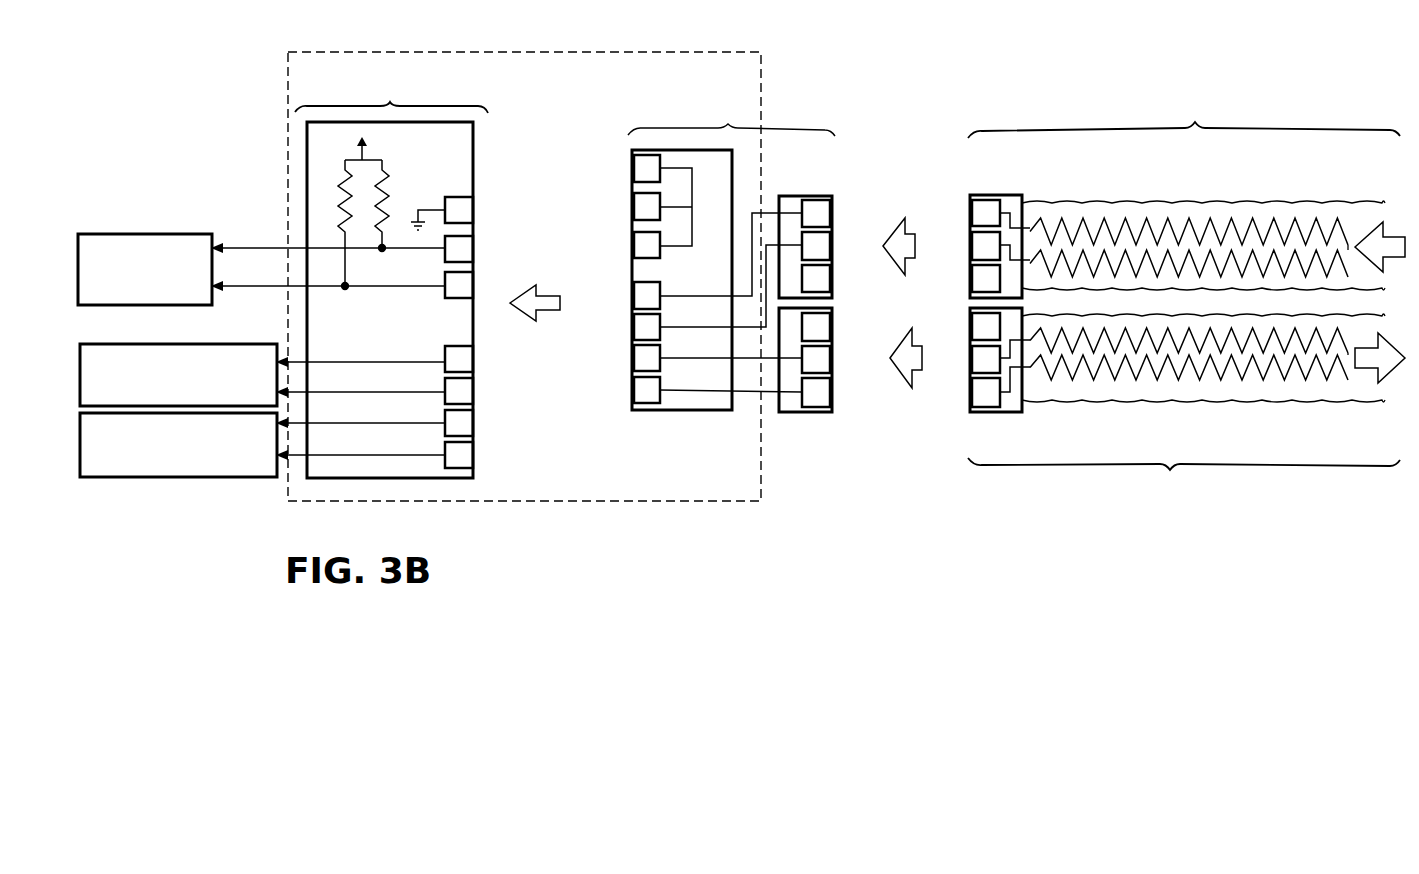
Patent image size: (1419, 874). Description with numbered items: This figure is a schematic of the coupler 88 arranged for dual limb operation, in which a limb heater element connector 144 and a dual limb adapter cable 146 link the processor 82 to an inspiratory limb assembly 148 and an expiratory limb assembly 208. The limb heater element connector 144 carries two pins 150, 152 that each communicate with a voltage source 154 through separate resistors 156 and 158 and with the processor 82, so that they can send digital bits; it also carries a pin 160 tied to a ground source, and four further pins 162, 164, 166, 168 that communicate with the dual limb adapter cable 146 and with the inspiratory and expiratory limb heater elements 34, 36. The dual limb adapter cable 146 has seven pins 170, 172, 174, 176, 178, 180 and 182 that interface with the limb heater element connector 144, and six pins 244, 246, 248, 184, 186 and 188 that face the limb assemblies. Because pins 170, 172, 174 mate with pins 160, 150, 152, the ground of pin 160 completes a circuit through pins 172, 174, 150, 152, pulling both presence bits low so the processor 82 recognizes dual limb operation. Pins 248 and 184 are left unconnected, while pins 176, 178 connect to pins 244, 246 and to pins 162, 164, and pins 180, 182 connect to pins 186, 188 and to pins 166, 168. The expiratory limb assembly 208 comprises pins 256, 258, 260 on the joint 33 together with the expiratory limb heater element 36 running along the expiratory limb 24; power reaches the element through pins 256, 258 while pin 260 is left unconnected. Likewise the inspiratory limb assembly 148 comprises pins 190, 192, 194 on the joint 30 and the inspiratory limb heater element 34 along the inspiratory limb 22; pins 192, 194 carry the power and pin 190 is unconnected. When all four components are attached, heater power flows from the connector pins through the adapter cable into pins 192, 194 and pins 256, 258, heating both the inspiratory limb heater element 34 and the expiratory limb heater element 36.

The coupler 88 is at (458, 50).
The limb heater element connector 144 is at (391, 278).
The dual limb adapter cable 146 is at (731, 255).
The voltage source 154 is at (366, 140).
The resistor 156 is at (412, 176).
The resistor 158 is at (342, 182).
The pin 160 is at (473, 208).
The pin 150 is at (473, 250).
The pin 152 is at (473, 286).
The pin 162 is at (473, 360).
The pin 164 is at (473, 392).
The pin 166 is at (473, 424).
The pin 168 is at (473, 456).
The processor 82 is at (136, 234).
The expiratory limb heater element 36 is at (142, 344).
The inspiratory limb heater element 34 is at (175, 476).
The pin 170 is at (634, 170).
The pin 172 is at (634, 208).
The pin 174 is at (634, 244).
The pin 176 is at (634, 292).
The pin 178 is at (634, 324).
The pin 180 is at (634, 356).
The pin 182 is at (634, 388).
The pin 244 is at (830, 207).
The pin 246 is at (830, 253).
The pin 248 is at (856, 281).
The pin 184 is at (870, 337).
The pin 186 is at (830, 360).
The pin 188 is at (832, 395).
The pin 256 is at (970, 208).
The pin 258 is at (990, 246).
The pin 260 is at (970, 280).
The pin 190 is at (972, 340).
The pin 192 is at (972, 370).
The pin 194 is at (969, 394).
The joint 33 is at (1012, 190).
The joint 30 is at (987, 414).
The expiratory limb assembly 208 is at (1184, 194).
The expiratory limb 24 is at (1158, 202).
The inspiratory limb 22 is at (1204, 402).
The inspiratory limb assembly 148 is at (1184, 405).